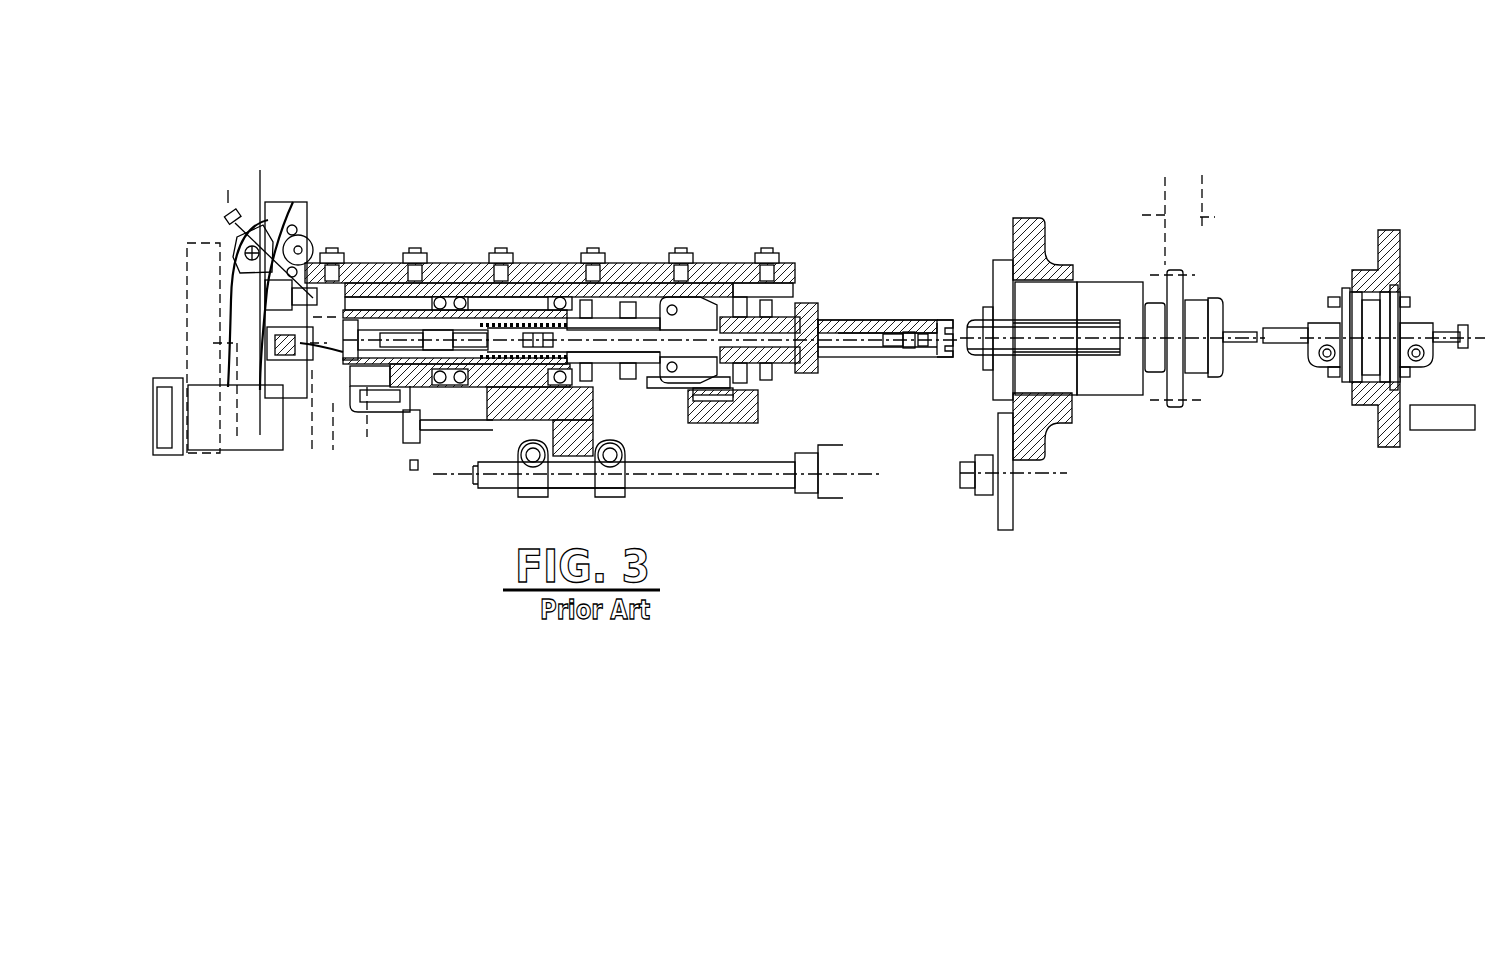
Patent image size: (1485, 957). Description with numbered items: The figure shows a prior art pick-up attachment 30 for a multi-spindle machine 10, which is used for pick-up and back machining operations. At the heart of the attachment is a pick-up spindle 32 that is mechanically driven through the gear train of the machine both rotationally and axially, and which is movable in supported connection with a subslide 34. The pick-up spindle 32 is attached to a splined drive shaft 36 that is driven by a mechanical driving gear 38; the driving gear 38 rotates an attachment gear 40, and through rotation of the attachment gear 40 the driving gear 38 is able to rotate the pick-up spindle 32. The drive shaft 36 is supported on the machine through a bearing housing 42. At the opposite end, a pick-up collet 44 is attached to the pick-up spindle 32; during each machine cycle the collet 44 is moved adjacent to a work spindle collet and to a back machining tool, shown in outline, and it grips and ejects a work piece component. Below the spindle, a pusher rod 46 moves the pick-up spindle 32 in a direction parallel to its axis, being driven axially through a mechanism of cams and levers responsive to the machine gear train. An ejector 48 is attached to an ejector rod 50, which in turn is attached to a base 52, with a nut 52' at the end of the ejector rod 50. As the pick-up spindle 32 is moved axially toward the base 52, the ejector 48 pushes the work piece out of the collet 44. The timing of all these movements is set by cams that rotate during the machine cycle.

The multi-spindle machine 10 is at (318, 98).
The pick-up attachment 30 is at (898, 212).
The pick-up spindle 32 is at (540, 320).
The subslide 34 is at (372, 262).
The splined drive shaft 36 is at (862, 320).
The mechanical driving gear 38 is at (1187, 245).
The attachment gear 40 is at (1187, 290).
The bearing housing 42 is at (1000, 268).
The pick-up collet 44 is at (283, 288).
The pusher rod 46 is at (715, 490).
The ejector 48 is at (440, 330).
The ejector rod 50 is at (1283, 345).
The base 52 is at (1384, 338).
The nut 52' is at (1459, 321).